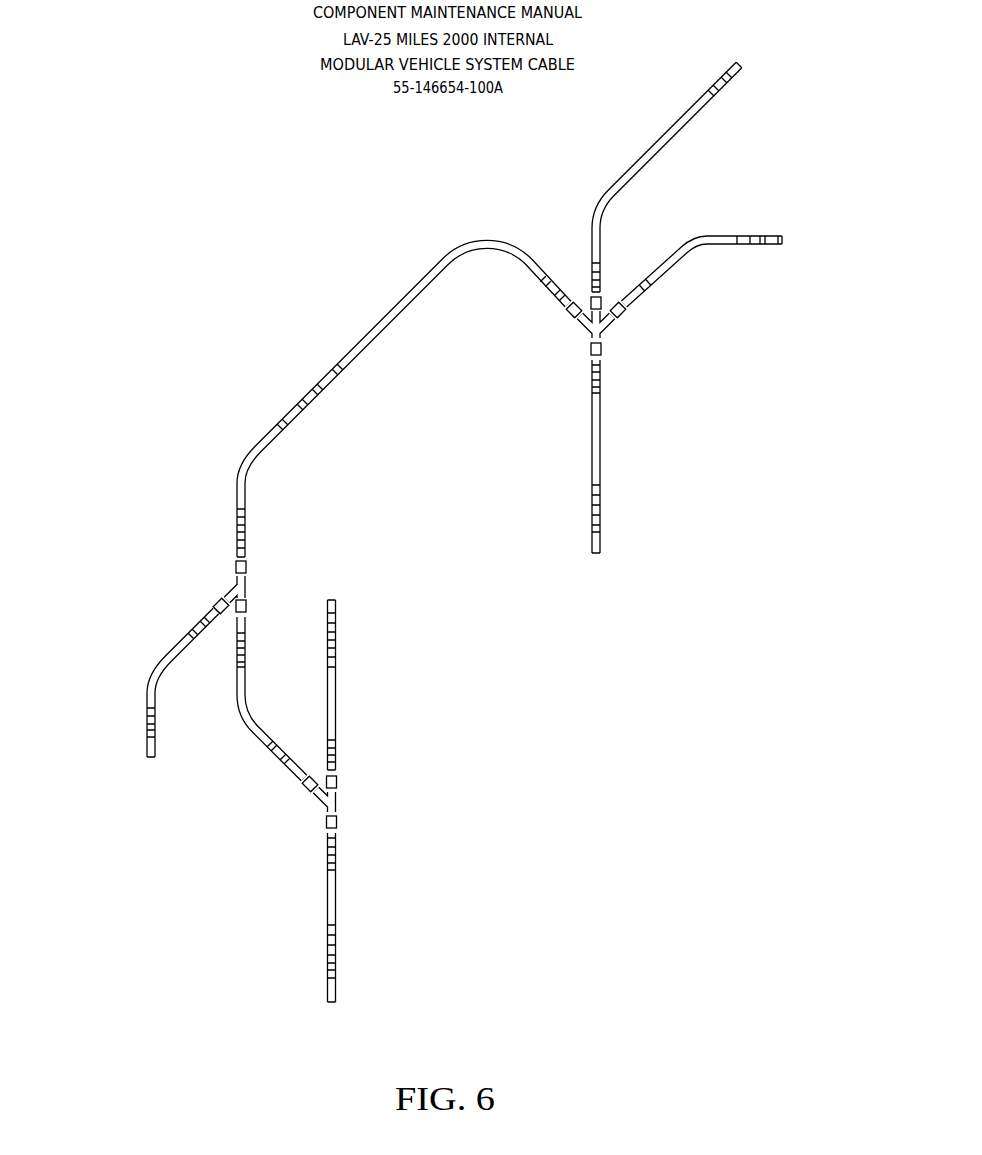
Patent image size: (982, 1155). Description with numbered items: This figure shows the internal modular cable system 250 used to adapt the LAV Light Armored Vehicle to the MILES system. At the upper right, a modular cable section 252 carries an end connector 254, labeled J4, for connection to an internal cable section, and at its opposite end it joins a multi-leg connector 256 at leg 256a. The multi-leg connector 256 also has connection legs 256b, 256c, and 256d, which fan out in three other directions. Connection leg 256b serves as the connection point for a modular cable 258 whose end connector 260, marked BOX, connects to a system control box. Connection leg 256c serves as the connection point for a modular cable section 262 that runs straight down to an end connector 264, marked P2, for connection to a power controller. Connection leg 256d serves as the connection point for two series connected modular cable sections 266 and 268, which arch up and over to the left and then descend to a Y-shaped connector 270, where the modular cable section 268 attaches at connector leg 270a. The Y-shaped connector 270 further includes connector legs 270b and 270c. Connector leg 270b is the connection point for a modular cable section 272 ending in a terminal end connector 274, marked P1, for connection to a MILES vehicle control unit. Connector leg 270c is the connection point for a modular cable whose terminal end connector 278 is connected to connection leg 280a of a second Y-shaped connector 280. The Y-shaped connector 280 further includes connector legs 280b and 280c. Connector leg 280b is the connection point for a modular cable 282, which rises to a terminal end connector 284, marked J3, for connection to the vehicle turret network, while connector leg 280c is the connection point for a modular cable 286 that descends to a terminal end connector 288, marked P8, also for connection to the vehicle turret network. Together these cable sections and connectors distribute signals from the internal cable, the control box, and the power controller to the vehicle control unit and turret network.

The internal modular cable system 250 is at (231, 242).
The modular cable section 252 is at (637, 162).
The end connector 254 is at (740, 80).
The multi-leg connector 256 is at (607, 333).
The leg 256a is at (603, 310).
The connection leg 256b is at (624, 315).
The connection leg 256c is at (590, 352).
The connection leg 256d is at (568, 316).
The modular cable 258 is at (678, 242).
The end connector 260 is at (772, 247).
The modular cable section 262 is at (600, 450).
The end connector 264 is at (602, 550).
The modular cable section 266 is at (432, 263).
The modular cable section 268 is at (243, 460).
The Y-shaped connector 270 is at (247, 580).
The connector leg 270a is at (236, 565).
The connector leg 270b is at (218, 598).
The connector leg 270c is at (247, 608).
The modular cable section 272 is at (150, 687).
The terminal end connector 274 is at (143, 757).
The terminal end connector 278 is at (292, 777).
The Y-shaped connector 280 is at (327, 808).
The connection leg 280a is at (306, 795).
The connector leg 280b is at (338, 787).
The connector leg 280c is at (338, 822).
The modular cable 282 is at (338, 683).
The terminal end connector 284 is at (340, 608).
The modular cable 286 is at (327, 893).
The terminal end connector 288 is at (327, 993).